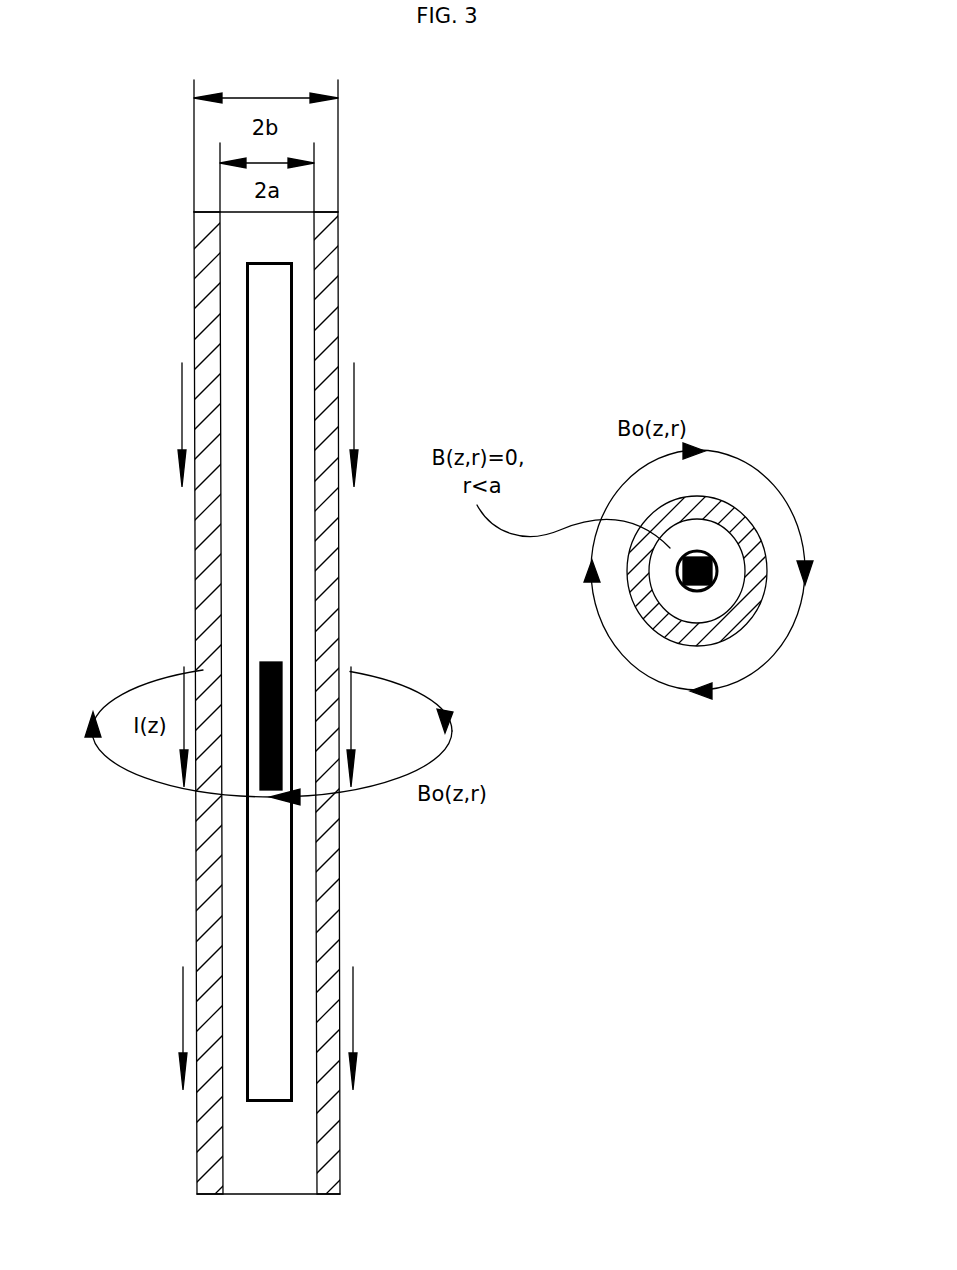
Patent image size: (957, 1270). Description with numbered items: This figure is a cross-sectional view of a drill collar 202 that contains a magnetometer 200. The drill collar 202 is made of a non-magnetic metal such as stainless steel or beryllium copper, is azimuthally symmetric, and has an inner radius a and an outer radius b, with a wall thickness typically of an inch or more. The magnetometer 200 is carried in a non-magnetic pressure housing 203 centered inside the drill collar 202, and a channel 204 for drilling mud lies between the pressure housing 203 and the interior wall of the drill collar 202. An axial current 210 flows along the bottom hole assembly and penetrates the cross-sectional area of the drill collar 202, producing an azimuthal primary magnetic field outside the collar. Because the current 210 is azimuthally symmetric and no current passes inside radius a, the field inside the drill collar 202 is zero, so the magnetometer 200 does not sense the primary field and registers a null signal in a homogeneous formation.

The magnetometer 200 is at (282, 715).
The drill collar 202 is at (615, 703).
The pressure housing 203 is at (282, 875).
The channel 204 is at (237, 322).
The axial current 210 is at (175, 417).